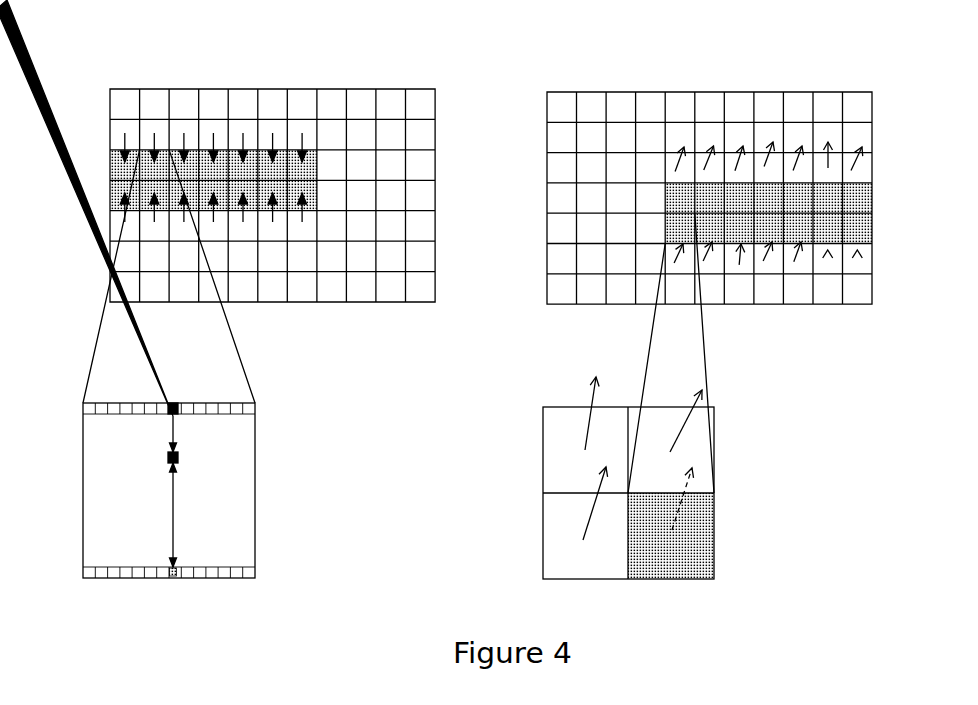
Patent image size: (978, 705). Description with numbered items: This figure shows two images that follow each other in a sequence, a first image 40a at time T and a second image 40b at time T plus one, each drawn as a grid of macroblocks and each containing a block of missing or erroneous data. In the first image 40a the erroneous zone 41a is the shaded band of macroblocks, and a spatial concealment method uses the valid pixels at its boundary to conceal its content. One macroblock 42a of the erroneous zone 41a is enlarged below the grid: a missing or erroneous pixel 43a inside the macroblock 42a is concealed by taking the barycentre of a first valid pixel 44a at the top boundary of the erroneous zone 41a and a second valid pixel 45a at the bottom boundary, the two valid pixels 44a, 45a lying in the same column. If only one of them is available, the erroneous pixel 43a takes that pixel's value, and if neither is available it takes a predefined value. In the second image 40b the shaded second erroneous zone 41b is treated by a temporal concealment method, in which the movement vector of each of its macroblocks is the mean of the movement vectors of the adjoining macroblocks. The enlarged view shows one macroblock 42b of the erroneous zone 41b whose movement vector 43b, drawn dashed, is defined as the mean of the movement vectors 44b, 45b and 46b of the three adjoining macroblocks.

The first image 40a is at (262, 89).
The erroneous zone 41a is at (110, 177).
The macroblock 42a is at (147, 162).
The missing or erroneous pixel 43a is at (168, 457).
The first valid pixel 44a is at (173, 403).
The second valid pixel 45a is at (173, 578).
The second image 40b is at (708, 92).
The second erroneous zone 41b is at (872, 200).
The macroblock 42b is at (682, 203).
The movement vector 43b is at (677, 520).
The movement vector 44b is at (588, 412).
The movement vector 45b is at (583, 525).
The movement vector 46b is at (683, 433).